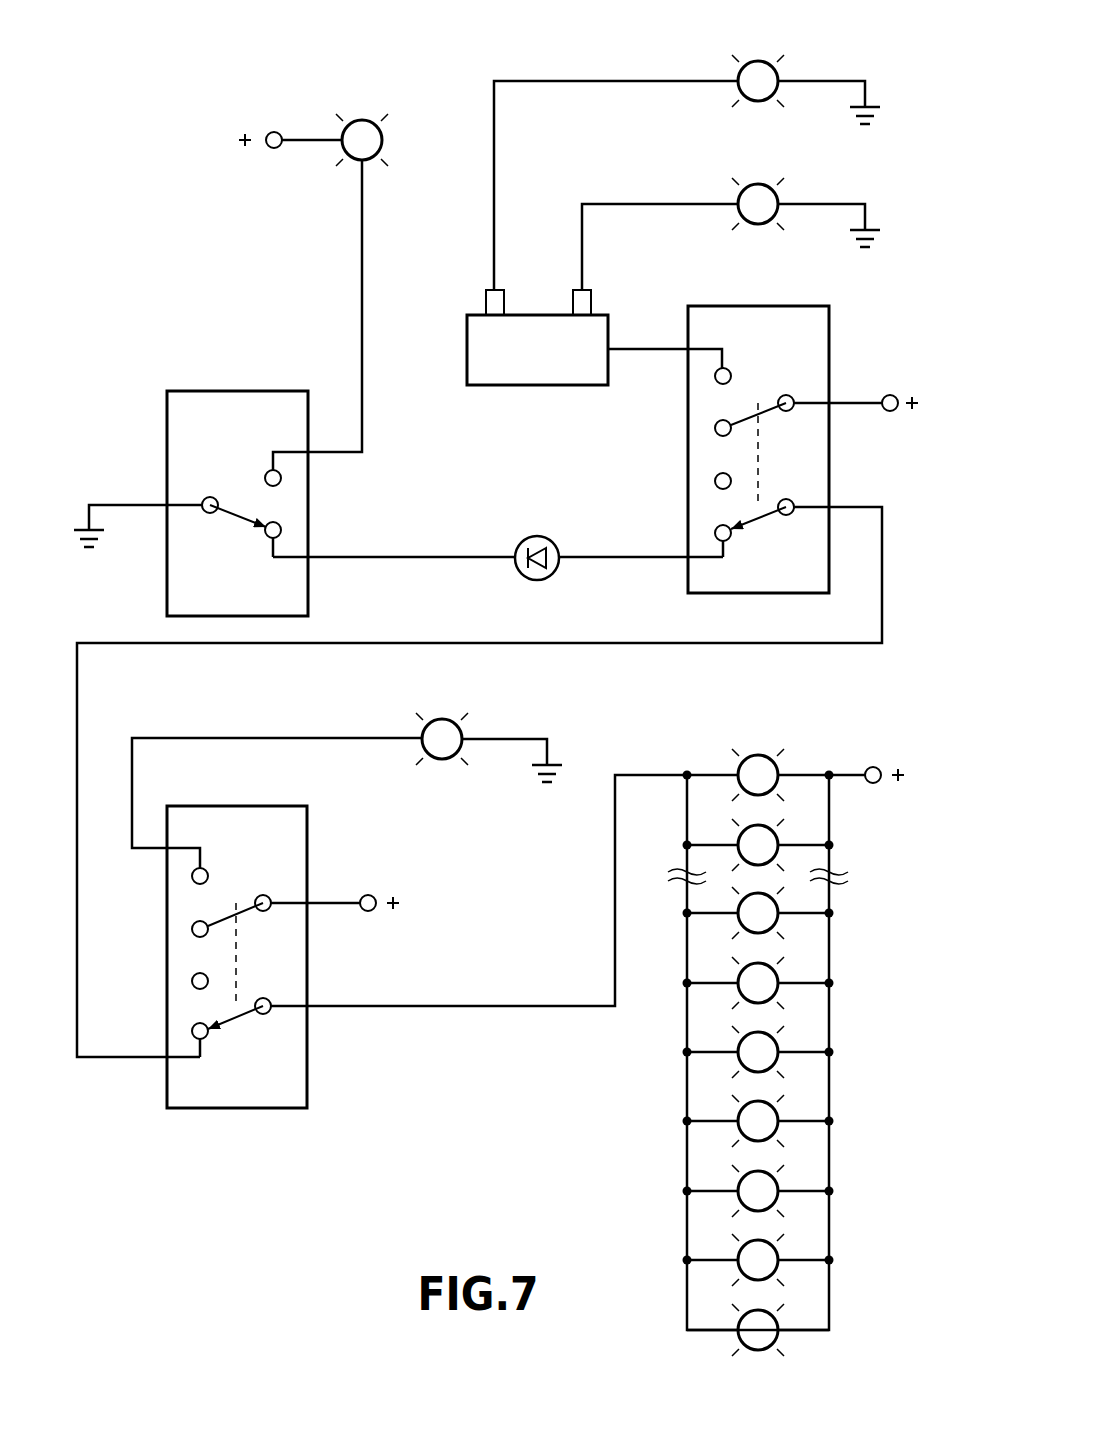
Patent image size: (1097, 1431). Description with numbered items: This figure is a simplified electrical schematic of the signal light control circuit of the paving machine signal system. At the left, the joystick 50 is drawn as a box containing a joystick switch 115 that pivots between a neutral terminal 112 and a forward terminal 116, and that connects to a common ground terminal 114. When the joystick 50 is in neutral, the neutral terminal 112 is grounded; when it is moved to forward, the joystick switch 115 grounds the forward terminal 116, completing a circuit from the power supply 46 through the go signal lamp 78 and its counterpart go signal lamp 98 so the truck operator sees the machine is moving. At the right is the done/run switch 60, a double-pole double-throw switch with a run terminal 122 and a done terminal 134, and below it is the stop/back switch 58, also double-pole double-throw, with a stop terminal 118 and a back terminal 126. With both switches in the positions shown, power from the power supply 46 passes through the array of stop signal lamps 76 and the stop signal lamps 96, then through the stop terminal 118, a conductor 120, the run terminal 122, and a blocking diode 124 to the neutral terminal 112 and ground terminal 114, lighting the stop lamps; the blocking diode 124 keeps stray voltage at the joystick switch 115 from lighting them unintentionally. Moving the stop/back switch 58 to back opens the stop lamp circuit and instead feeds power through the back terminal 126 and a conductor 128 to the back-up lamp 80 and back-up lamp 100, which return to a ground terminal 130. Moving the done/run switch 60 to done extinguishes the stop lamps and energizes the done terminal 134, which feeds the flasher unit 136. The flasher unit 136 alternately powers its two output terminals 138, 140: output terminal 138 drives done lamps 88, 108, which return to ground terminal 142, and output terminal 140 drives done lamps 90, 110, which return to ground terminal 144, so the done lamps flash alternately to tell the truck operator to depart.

The power supply 46 is at (274, 131).
The joystick 50 is at (267, 475).
The stop/back switch 58 is at (211, 989).
The done/run switch 60 is at (734, 420).
The stop signal lamps 76 is at (758, 1025).
The stop signal lamps 96 is at (760, 754).
The go signal lamp 78 is at (362, 113).
The go signal lamp 98 is at (361, 119).
The back-up lamp 80 is at (442, 710).
The back-up lamp 100 is at (443, 719).
The done lamp 88 is at (758, 55).
The done lamp 108 is at (759, 61).
The done lamp 90 is at (758, 178).
The done lamp 110 is at (759, 184).
The neutral terminal 112 is at (290, 530).
The ground terminal 114 is at (132, 505).
The joystick switch 115 is at (211, 497).
The forward terminal 116 is at (290, 478).
The stop terminal 118 is at (192, 1031).
The conductor 120 is at (362, 643).
The run terminal 122 is at (715, 533).
The blocking diode 124 is at (537, 536).
The back terminal 126 is at (192, 876).
The conductor 128 is at (362, 738).
The ground terminal 130 is at (520, 738).
The done terminal 134 is at (715, 376).
The flasher unit 136 is at (538, 370).
The output terminal 138 is at (486, 302).
The output terminal 140 is at (592, 302).
The ground terminal 142 is at (839, 80).
The ground terminal 144 is at (839, 204).